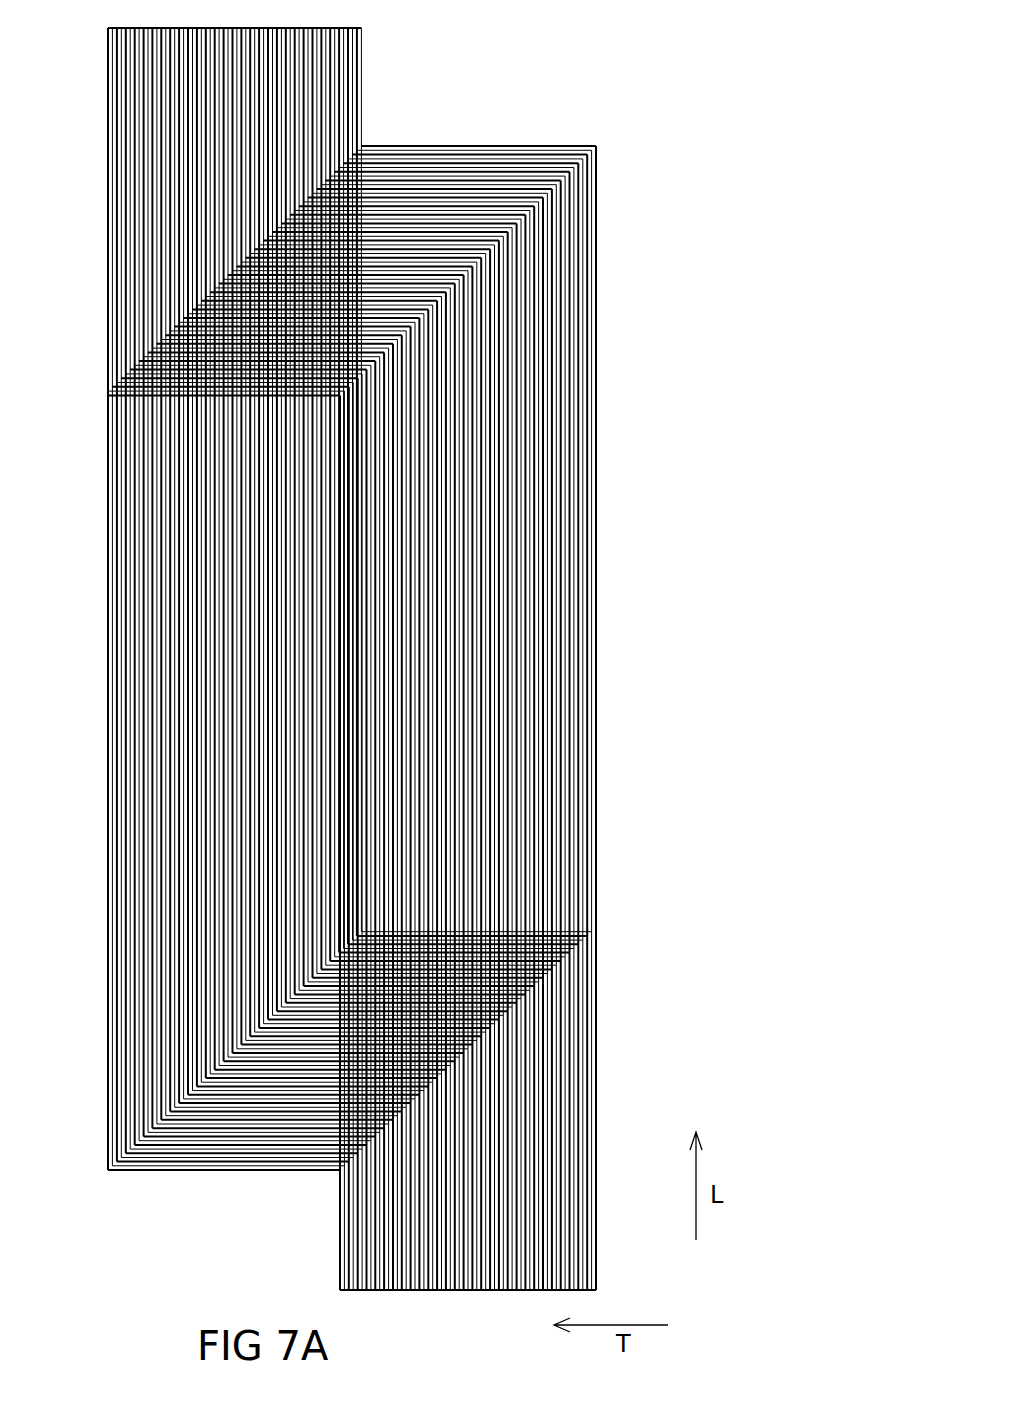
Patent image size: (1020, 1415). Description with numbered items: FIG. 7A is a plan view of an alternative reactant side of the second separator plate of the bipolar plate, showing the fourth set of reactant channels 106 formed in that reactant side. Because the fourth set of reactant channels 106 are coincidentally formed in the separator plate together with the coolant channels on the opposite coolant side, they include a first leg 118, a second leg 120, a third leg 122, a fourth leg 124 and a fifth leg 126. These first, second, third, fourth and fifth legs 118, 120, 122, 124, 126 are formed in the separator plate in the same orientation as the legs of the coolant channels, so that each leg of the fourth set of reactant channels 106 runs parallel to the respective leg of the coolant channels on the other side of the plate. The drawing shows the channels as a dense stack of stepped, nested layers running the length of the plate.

The fourth set of reactant channels 106 is at (545, 563).
The first leg 118 is at (592, 955).
The second leg 120 is at (152, 1168).
The third leg 122 is at (590, 875).
The fourth leg 124 is at (452, 148).
The fifth leg 126 is at (350, 47).